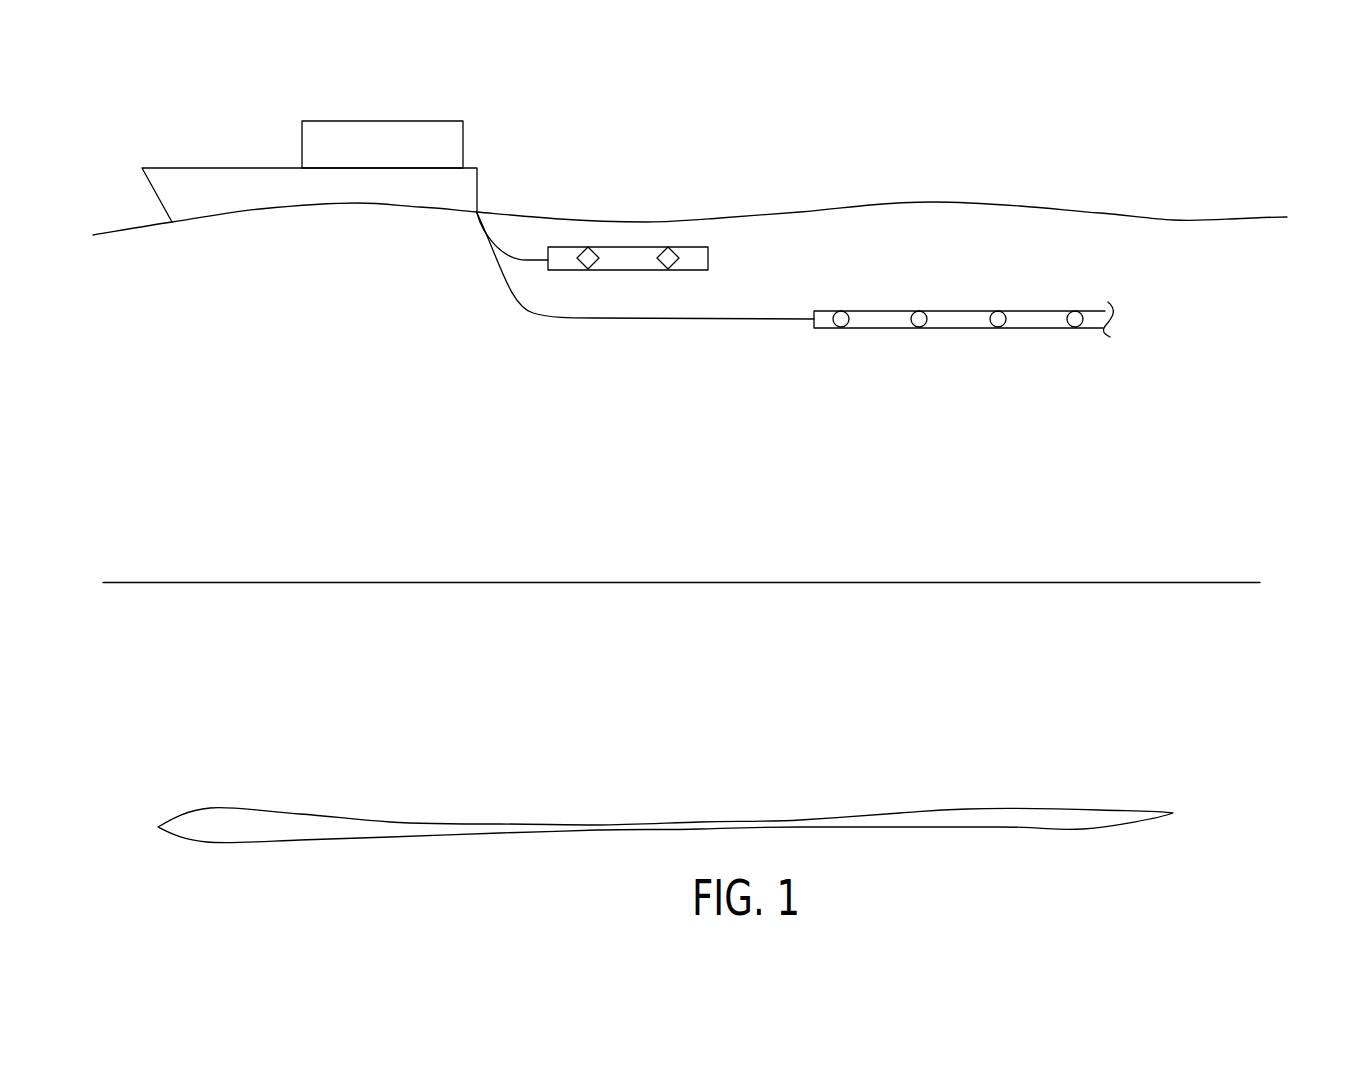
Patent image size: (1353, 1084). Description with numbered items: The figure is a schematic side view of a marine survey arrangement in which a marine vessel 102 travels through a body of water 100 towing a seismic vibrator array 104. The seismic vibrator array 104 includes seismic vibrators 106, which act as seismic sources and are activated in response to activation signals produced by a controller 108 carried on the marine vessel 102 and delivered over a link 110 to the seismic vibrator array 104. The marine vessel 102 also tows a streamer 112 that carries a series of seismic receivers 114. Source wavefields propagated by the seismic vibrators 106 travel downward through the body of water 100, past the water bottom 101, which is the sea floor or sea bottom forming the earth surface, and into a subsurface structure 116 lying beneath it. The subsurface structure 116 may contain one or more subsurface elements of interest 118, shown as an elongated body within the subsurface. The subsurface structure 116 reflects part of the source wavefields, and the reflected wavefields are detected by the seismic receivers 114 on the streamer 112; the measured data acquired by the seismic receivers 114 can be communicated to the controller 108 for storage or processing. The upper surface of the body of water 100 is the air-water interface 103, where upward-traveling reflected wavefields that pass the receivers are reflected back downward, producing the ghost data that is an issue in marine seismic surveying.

The body of water 100 is at (168, 374).
The water bottom 101 is at (1140, 582).
The marine vessel 102 is at (216, 168).
The air-water interface 103 is at (1163, 218).
The seismic vibrator array 104 is at (690, 247).
The seismic vibrators 106 is at (660, 250).
The controller 108 is at (383, 121).
The link 110 is at (503, 248).
The streamer 112 is at (878, 310).
The seismic receivers 114 is at (1067, 320).
The subsurface structure 116 is at (1272, 582).
The subsurface elements of interest 118 is at (230, 823).